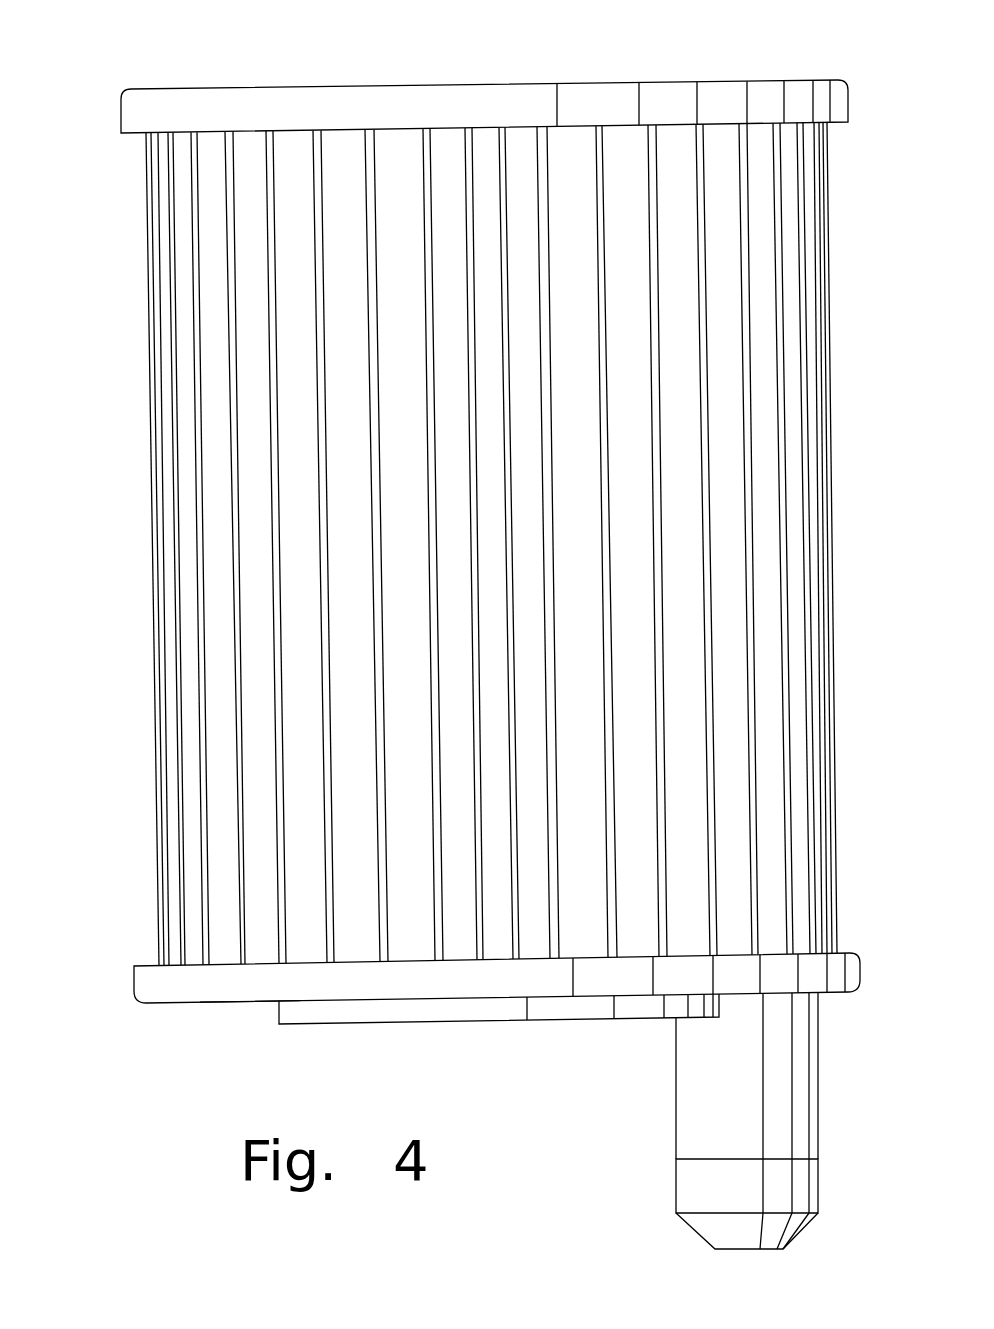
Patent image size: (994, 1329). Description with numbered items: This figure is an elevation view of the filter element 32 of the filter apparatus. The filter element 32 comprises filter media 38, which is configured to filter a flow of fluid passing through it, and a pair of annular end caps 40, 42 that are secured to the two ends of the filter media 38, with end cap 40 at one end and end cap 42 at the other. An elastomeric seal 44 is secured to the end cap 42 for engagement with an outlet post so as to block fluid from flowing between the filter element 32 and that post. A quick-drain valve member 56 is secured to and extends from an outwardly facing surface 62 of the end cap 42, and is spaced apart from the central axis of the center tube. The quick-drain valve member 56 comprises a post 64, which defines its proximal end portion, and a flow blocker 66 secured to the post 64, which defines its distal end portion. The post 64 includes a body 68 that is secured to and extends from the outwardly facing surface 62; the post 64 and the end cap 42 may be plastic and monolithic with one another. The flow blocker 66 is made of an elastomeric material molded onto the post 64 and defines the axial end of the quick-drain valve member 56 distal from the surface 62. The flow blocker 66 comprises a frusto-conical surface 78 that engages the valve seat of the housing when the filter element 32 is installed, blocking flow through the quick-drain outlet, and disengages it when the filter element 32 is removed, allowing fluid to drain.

The filter element 32 is at (116, 78).
The end cap 40 is at (390, 95).
The filter media 38 is at (786, 497).
The end cap 42 is at (183, 985).
The outwardly facing surface 62 is at (250, 1003).
The elastomeric seal 44 is at (345, 1025).
The quick-drain valve member 56 is at (648, 1143).
The post 64 is at (694, 1057).
The body 68 is at (688, 1113).
The flow blocker 66 is at (698, 1186).
The surface 78 is at (690, 1228).